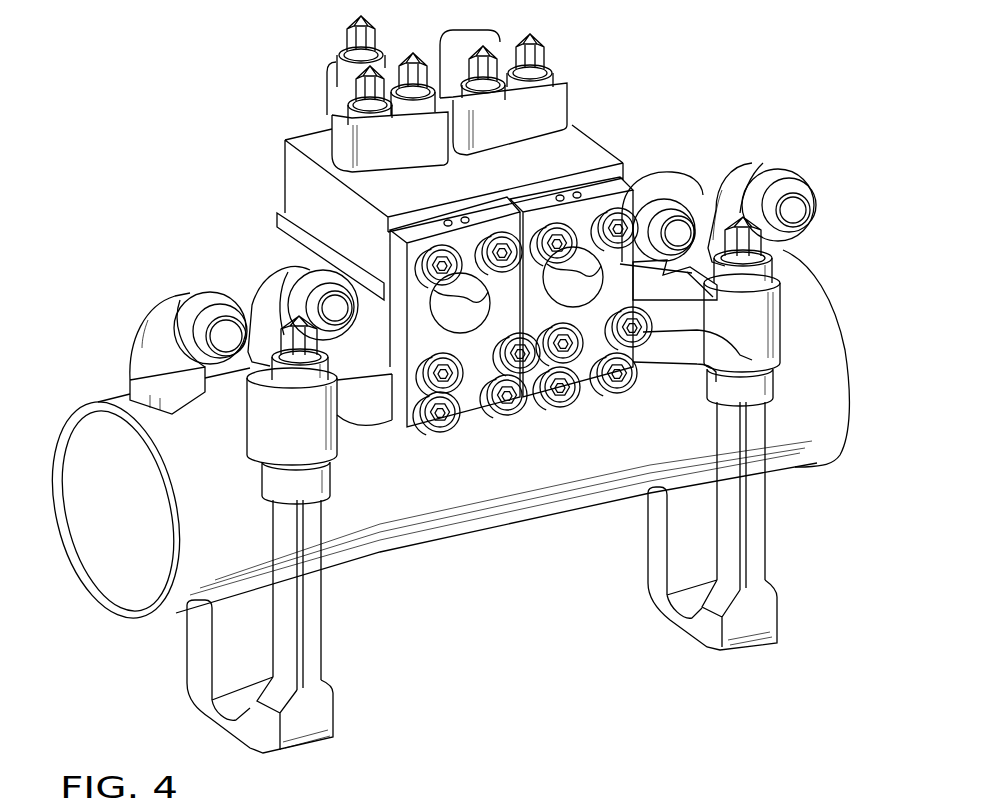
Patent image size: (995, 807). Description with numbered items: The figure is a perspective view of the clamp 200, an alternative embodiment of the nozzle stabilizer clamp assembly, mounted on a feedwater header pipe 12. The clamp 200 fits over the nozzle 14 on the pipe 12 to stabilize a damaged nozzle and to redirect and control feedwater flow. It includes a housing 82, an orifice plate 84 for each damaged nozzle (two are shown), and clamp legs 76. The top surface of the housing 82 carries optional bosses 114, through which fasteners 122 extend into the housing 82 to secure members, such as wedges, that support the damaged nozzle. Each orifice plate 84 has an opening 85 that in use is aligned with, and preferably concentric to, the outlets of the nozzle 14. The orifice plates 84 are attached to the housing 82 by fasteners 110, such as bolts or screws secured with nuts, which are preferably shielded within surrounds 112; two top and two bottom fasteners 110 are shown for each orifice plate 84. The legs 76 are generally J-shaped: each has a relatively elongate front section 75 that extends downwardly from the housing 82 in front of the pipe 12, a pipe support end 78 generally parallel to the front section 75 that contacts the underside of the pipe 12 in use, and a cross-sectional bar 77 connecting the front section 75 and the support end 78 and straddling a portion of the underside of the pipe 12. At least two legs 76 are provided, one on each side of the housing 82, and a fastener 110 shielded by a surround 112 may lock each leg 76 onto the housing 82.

The clamp 200 is at (158, 150).
The pipe 12 is at (113, 400).
The nozzle 14 is at (180, 305).
The housing 82 is at (301, 133).
The bosses 114 is at (540, 118).
The orifice plate 84 is at (455, 245).
The surrounds 112 is at (545, 80).
The fasteners 122 is at (540, 40).
The opening 85 is at (392, 382).
The fasteners 110 is at (620, 243).
The front section 75 is at (343, 613).
The clamp legs 76 is at (311, 668).
The cross-sectional bar 77 is at (223, 718).
The pipe support end 78 is at (200, 667).